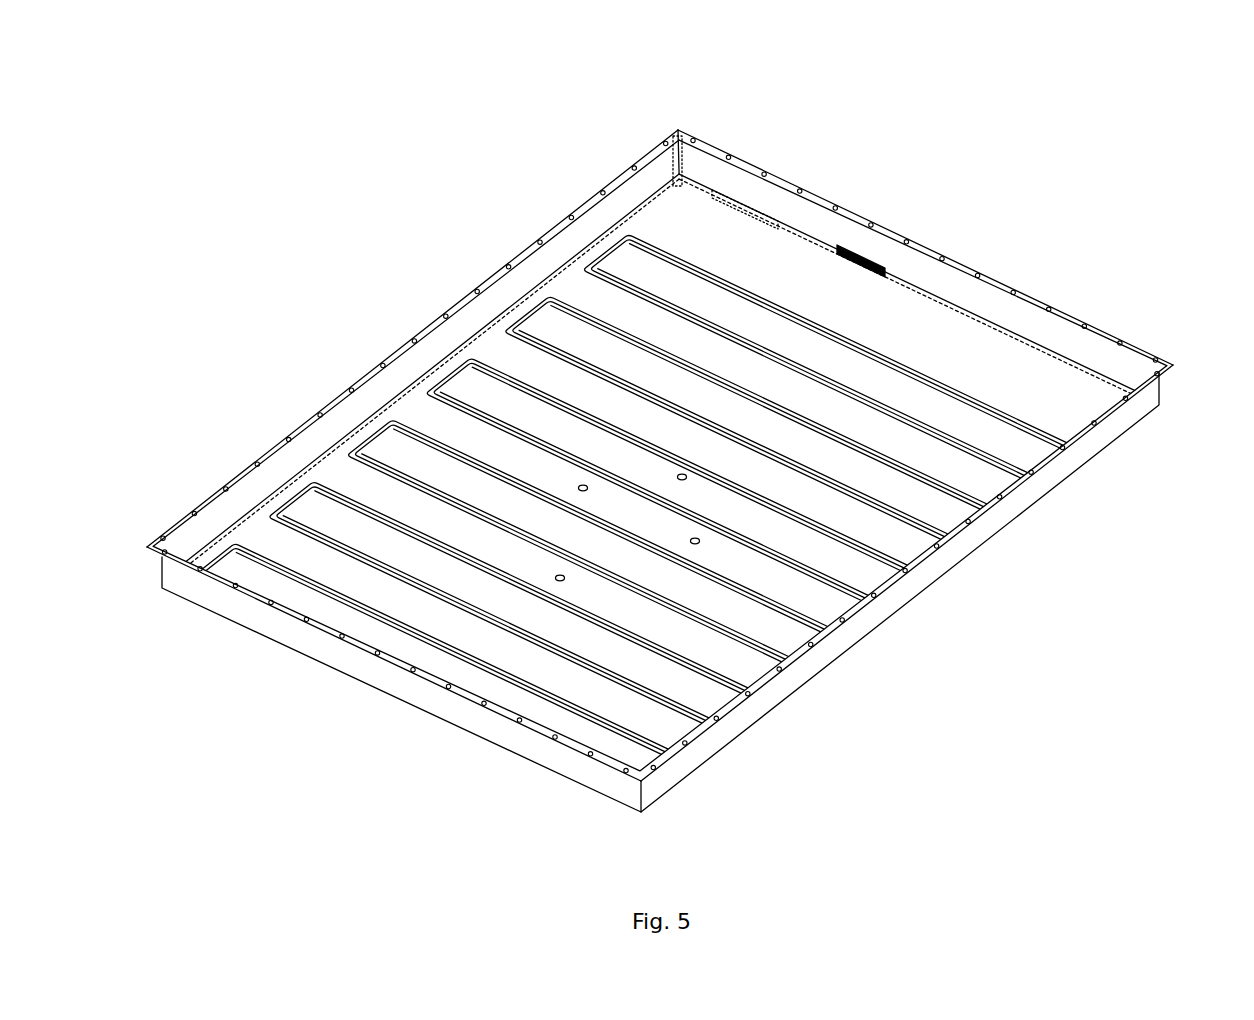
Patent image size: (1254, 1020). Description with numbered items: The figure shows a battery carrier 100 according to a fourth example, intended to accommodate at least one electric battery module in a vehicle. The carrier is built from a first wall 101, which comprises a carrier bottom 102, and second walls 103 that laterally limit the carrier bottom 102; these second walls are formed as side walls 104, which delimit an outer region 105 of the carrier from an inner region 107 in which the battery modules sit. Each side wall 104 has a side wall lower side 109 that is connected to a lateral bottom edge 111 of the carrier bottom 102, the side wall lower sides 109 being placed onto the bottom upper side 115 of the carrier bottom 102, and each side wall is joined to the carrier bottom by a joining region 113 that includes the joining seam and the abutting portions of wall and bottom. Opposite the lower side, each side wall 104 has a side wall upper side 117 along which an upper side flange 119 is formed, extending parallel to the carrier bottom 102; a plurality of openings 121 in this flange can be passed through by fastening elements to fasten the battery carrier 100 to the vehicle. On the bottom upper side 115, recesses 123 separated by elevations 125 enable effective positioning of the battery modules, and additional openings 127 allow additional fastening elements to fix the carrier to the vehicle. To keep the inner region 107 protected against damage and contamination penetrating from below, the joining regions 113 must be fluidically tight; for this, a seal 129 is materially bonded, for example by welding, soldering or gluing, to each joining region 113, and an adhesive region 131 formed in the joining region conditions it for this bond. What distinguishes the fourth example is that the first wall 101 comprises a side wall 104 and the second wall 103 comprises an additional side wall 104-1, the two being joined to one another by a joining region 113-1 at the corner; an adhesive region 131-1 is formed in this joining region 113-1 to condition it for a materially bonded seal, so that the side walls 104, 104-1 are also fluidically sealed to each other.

The battery carrier 100 is at (212, 136).
The first wall 101 is at (828, 232).
The carrier bottom 102 is at (1045, 408).
The second wall 103 is at (386, 380).
The side wall 104 is at (958, 553).
The additional side wall 104-1 is at (432, 367).
The outer region 105 is at (1075, 556).
The inner region 107 is at (962, 471).
The side wall lower side 109 is at (715, 196).
The lateral bottom edge 111 is at (713, 200).
The joining region 113 is at (766, 222).
The joining region 113-1 is at (679, 137).
The bottom upper side 115 is at (990, 364).
The side wall upper side 117 is at (613, 192).
The upper side flange 119 is at (593, 197).
The openings 121 is at (633, 164).
The recesses 123 is at (612, 498).
The elevations 125 is at (760, 517).
The additional openings 127 is at (578, 488).
The seal 129 is at (862, 262).
The adhesive region 131 is at (745, 222).
The adhesive region 131-1 is at (670, 165).